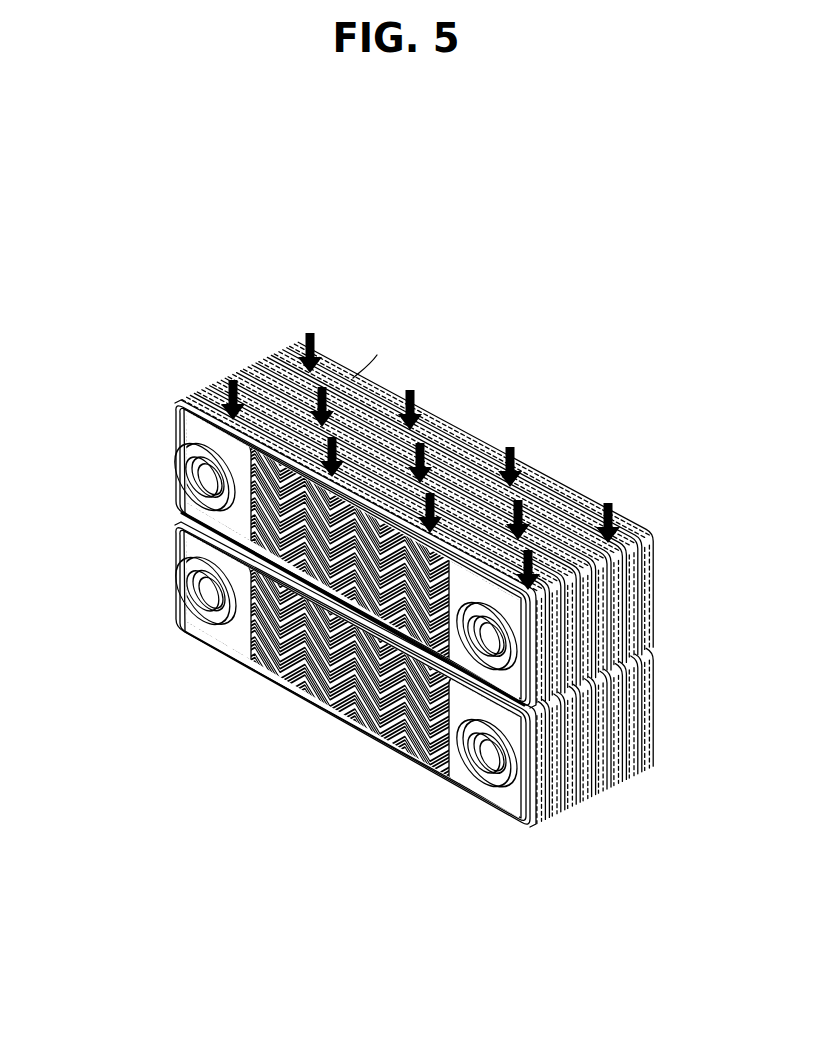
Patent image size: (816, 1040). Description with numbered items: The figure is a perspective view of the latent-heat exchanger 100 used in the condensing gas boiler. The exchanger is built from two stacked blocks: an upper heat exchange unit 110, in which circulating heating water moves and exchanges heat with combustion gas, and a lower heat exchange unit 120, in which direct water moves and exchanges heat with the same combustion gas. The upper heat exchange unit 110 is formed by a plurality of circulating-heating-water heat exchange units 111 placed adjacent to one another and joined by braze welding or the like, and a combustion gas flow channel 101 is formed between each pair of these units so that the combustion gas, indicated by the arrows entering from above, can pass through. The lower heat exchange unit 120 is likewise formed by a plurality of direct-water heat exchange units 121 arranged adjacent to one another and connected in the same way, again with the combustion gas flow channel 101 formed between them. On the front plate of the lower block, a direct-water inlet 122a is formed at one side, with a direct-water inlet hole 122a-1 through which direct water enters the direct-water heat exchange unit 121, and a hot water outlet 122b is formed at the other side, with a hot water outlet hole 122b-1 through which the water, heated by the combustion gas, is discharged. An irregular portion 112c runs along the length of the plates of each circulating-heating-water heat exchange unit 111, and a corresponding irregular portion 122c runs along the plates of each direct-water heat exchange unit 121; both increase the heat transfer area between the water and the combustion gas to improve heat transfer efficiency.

The latent-heat exchanger 100 is at (139, 250).
The upper heat exchange unit 110 is at (160, 343).
The circulating-heating-water heat exchange unit 111 is at (204, 392).
The combustion gas flow channel 101 is at (457, 437).
The irregular portion 112c is at (178, 512).
The lower heat exchange unit 120 is at (670, 825).
The direct-water heat exchange unit 121 is at (545, 822).
The direct-water inlet 122a is at (508, 785).
The direct-water inlet hole 122a-1 is at (466, 786).
The hot water outlet 122b is at (198, 569).
The hot water outlet hole 122b-1 is at (198, 599).
The irregular portion 122c is at (178, 625).